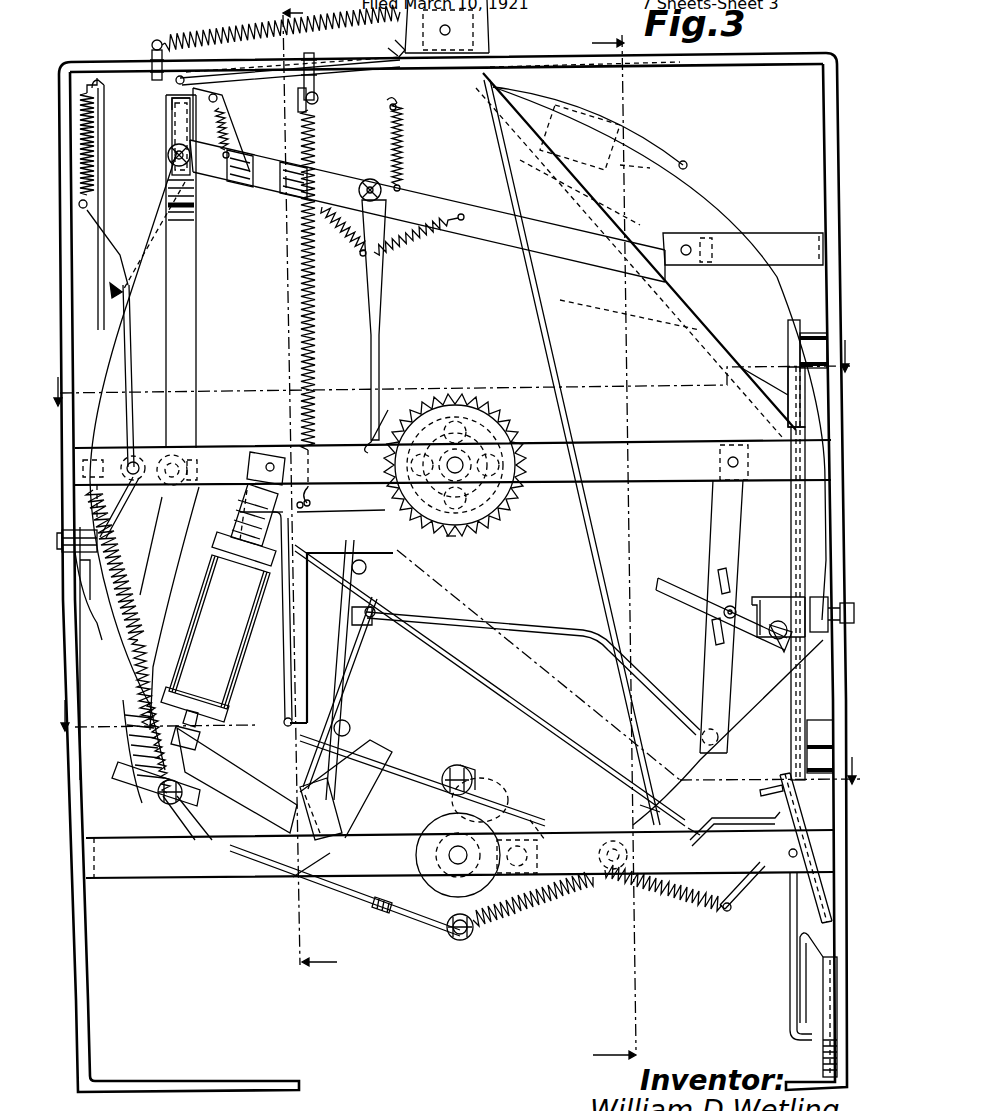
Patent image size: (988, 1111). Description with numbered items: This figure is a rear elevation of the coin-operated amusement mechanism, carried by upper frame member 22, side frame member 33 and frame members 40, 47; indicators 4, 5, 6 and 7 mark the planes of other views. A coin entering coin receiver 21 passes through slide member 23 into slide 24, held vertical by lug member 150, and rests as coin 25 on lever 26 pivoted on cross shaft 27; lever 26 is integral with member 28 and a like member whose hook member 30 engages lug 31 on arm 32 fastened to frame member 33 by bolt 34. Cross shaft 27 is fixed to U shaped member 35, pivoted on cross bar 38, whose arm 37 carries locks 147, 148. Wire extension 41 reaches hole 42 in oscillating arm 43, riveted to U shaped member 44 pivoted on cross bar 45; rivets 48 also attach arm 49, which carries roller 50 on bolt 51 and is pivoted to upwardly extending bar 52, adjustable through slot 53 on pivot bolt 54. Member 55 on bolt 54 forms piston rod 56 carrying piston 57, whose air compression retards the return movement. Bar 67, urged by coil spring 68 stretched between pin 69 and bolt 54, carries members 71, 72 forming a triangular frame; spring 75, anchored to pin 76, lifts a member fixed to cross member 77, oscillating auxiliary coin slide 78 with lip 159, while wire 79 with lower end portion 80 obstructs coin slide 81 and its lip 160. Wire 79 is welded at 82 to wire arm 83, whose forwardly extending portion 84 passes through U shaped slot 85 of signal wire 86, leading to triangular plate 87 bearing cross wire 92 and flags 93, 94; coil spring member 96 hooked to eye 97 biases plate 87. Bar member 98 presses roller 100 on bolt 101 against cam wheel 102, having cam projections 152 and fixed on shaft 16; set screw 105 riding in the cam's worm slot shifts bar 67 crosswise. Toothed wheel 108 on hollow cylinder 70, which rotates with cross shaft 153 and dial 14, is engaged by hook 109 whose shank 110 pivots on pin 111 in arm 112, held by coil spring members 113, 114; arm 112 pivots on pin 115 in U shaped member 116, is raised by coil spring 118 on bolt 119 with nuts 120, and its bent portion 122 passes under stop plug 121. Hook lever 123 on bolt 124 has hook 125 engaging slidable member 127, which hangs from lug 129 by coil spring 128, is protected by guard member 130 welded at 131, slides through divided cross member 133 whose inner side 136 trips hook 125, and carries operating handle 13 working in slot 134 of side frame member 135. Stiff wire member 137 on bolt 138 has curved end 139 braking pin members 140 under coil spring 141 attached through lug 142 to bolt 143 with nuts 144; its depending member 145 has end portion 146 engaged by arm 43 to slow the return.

The section line 4- 4 is at (624, 549).
The section line 5- 5 is at (299, 493).
The section line 6- 6 is at (461, 752).
The section line 7- 7 is at (456, 382).
The operating handle 13 is at (82, 624).
The large dial 14 is at (100, 362).
The rotatable shaft 16 is at (450, 853).
The coin receiver 21 is at (492, 12).
The upper frame member 22 is at (522, 63).
The slide member 23 is at (640, 210).
The slide 24 is at (790, 510).
The coin 25 is at (793, 573).
The lever 26 is at (790, 683).
The cross shaft 27 is at (724, 612).
The member 28 is at (660, 577).
The hook member 30 is at (787, 650).
The lug 31 is at (755, 597).
The arm 32 is at (778, 597).
The side frame member 33 is at (830, 152).
The bolt 34 is at (817, 600).
The U shaped member 35 is at (727, 445).
The downwardly extending arm 37 is at (712, 545).
The cross bar 38 is at (728, 462).
The frame member 40 is at (668, 448).
The wire extension 41 is at (557, 632).
The hole 42 is at (383, 613).
The oscillating arm 43 is at (362, 657).
The U shaped member 44 is at (310, 789).
The cross bar 45 is at (330, 853).
The frame member 47 is at (122, 872).
The rivets 48 is at (237, 780).
The arm 49 is at (346, 789).
The roller 50 is at (467, 762).
The bolt 51 is at (470, 780).
The upwardly extending bar 52 is at (198, 304).
The slot 53 is at (177, 822).
The pivot bolt 54 is at (147, 805).
The member 55 is at (190, 750).
The piston rod 56 is at (201, 728).
The piston 57 is at (218, 627).
The bar 67 is at (344, 602).
The coil spring 68 is at (113, 537).
The pin 69 is at (97, 462).
The hollow cylinder 70 is at (467, 403).
The member 71 is at (507, 697).
The member 72 is at (383, 760).
The spring 75 is at (690, 897).
The pin 76 is at (612, 862).
The cross member 77 is at (790, 856).
The auxiliary coin slide 78 is at (795, 807).
The wire 79 is at (790, 973).
The lower end portion 80 is at (805, 1042).
The coin slide 81 is at (823, 1057).
The weld 82 is at (767, 817).
The wire arm 83 is at (697, 820).
The forwardly extending portion 84 is at (614, 885).
The U shaped slot 85 is at (660, 810).
The signal wire 86 is at (494, 78).
The triangular plate 87 is at (403, 44).
The cross wire 92 is at (205, 68).
The flag 93 is at (622, 165).
The flag 94 is at (300, 110).
The coil spring member 96 is at (198, 40).
The eye 97 is at (152, 46).
The bar member 98 is at (352, 897).
The roller 100 is at (455, 942).
The bolt 101 is at (473, 942).
The cam wheel 102 is at (440, 900).
The set screw 105 is at (530, 820).
The toothed wheel 108 is at (427, 403).
The hook 109 is at (385, 405).
The shank 110 is at (380, 282).
The pin 111 is at (365, 180).
The arm 112 is at (410, 193).
The coil spring member 113 is at (452, 228).
The coil spring member 114 is at (326, 253).
The pin 115 is at (690, 247).
The U shaped member 116 is at (787, 245).
The coil spring 118 is at (403, 130).
The bolt 119 is at (390, 107).
The nuts 120 is at (388, 100).
The stop plug 121 is at (270, 172).
The bent portion 122 is at (293, 192).
The hook lever 123 is at (152, 200).
The bolt 124 is at (172, 147).
The hook 125 is at (112, 292).
The slidable member 127 is at (133, 360).
The coil spring 128 is at (216, 99).
The lug 129 is at (92, 86).
The sheet metal guard member 130 is at (104, 147).
The weld point 131 is at (113, 220).
The divided cross member 133 is at (135, 462).
The slot 134 is at (82, 707).
The side frame member 135 is at (82, 677).
The inner side 136 is at (134, 483).
The stiff wire member 137 is at (310, 503).
The bolt 138 is at (215, 455).
The curved end 139 is at (452, 538).
The rigid pin members 140 is at (507, 517).
The coil spring 141 is at (303, 323).
The lug 142 is at (301, 509).
The bolt 143 is at (318, 96).
The nuts 144 is at (315, 55).
The depending member 145 is at (283, 660).
The end portion 146 is at (266, 631).
The lock 147 is at (720, 573).
The lock 148 is at (713, 630).
The lug member 150 is at (812, 337).
The cam projections 152 is at (493, 787).
The cross shaft 153 is at (457, 460).
The lip 159 is at (174, 112).
The lip 160 is at (803, 930).